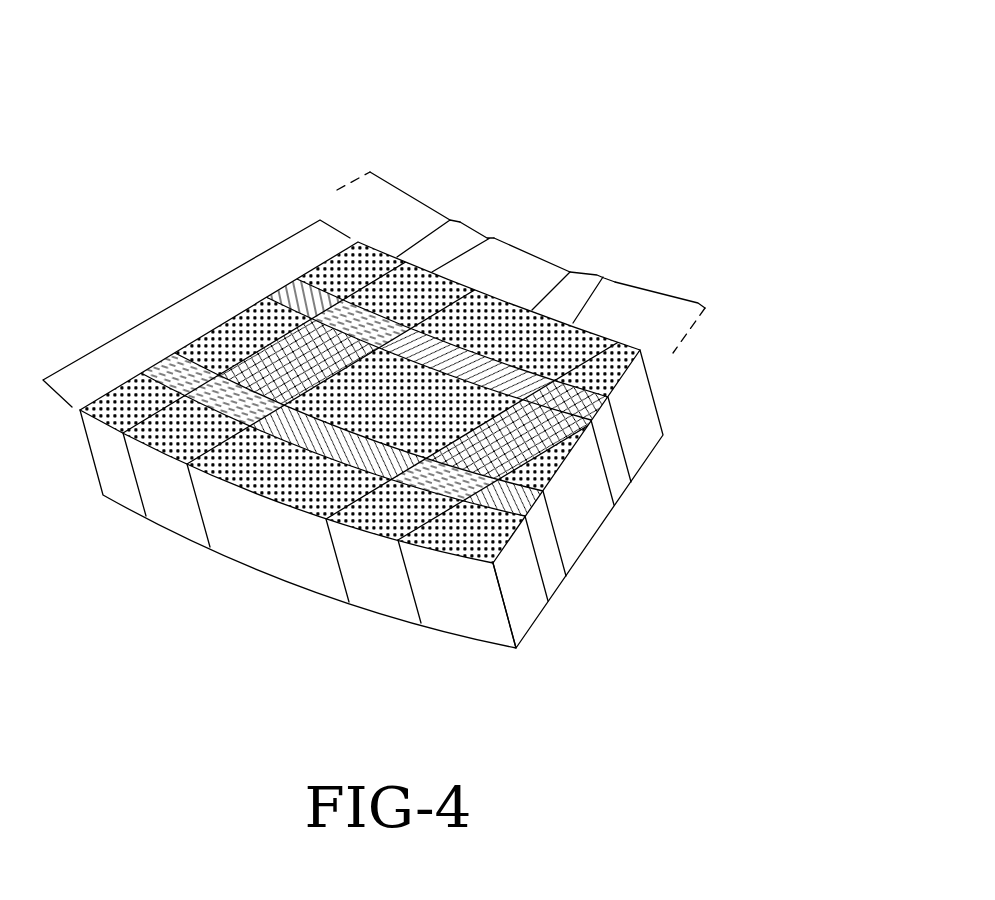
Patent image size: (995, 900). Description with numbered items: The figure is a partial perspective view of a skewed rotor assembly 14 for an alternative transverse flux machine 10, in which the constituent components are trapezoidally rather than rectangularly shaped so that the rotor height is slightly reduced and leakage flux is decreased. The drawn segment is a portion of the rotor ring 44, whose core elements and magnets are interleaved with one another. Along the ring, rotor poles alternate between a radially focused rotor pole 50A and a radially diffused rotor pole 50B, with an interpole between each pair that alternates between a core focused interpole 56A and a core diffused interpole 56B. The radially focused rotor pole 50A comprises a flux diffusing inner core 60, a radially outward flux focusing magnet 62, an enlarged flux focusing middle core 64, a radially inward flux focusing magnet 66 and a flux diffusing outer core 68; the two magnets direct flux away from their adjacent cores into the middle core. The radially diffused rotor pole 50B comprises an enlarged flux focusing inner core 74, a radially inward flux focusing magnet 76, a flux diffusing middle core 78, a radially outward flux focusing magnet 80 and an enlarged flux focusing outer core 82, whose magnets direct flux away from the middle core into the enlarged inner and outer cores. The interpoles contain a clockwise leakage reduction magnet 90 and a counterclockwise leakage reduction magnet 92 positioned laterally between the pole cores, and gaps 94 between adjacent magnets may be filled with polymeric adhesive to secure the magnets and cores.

The transverse flux machine 10 is at (237, 123).
The rotor assembly 14 is at (645, 620).
The rotor ring 44 is at (178, 300).
The radially focused rotor pole 50A is at (662, 290).
The core focused interpole 56A is at (480, 227).
The radially diffused rotor pole 50B is at (537, 253).
The core diffused interpole 56B is at (600, 273).
The flux diffusing inner core 60 is at (593, 364).
The radially outward flux focusing magnet 62 is at (568, 402).
The enlarged flux focusing middle core 64 is at (543, 445).
The radially inward flux focusing magnet 66 is at (503, 505).
The flux diffusing outer core 68 is at (467, 535).
The enlarged flux focusing inner core 74 is at (463, 313).
The radially inward flux focusing magnet 76 is at (410, 350).
The flux diffusing middle core 78 is at (347, 372).
The radially outward flux focusing magnet 80 is at (290, 437).
The enlarged flux focusing outer core 82 is at (297, 485).
The clockwise leakage reduction magnet 90 is at (437, 443).
The counterclockwise leakage reduction magnet 92 is at (397, 517).
The gaps 94 is at (398, 470).